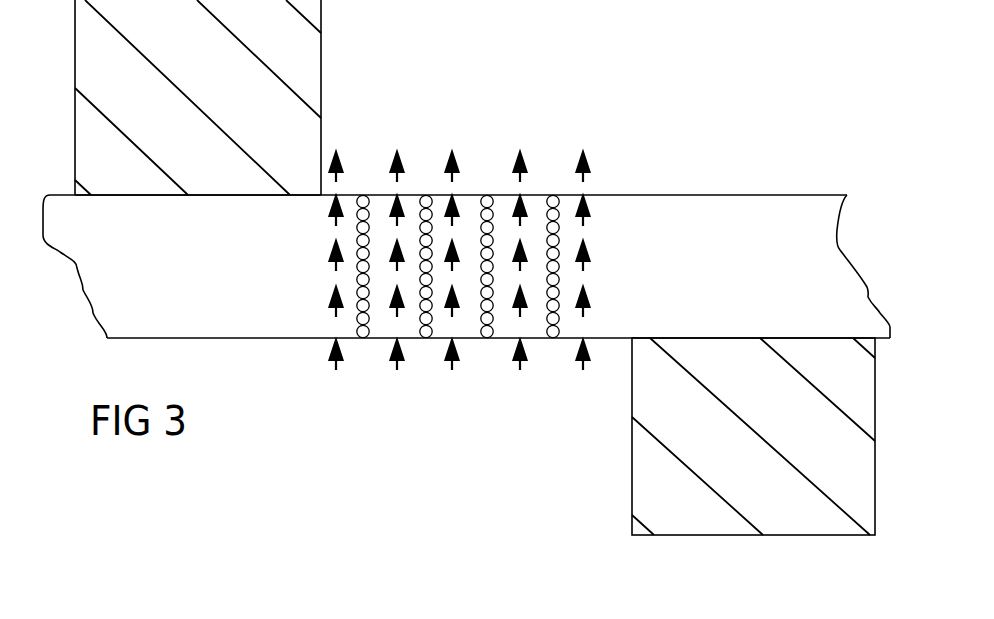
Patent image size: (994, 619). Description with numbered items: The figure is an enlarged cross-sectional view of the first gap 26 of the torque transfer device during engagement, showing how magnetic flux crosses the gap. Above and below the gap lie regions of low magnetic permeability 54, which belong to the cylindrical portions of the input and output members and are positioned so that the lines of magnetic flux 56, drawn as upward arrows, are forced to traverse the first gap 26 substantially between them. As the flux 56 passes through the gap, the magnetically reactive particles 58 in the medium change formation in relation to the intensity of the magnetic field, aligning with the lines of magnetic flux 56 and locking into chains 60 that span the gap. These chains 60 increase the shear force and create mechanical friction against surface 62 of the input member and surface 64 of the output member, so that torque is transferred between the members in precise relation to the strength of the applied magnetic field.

The first gap 26 is at (768, 225).
The regions of low magnetic permeability 54 is at (307, 44).
The lines of magnetic flux 56 is at (398, 369).
The magnetically reactive particles 58 is at (553, 195).
The chains 60 is at (366, 262).
The surface of input member 62 is at (593, 196).
The surface of output member 64 is at (592, 339).